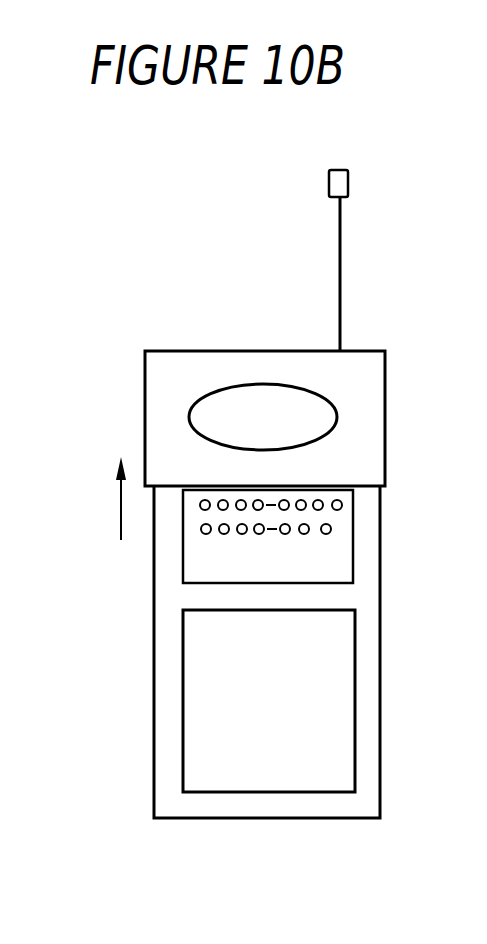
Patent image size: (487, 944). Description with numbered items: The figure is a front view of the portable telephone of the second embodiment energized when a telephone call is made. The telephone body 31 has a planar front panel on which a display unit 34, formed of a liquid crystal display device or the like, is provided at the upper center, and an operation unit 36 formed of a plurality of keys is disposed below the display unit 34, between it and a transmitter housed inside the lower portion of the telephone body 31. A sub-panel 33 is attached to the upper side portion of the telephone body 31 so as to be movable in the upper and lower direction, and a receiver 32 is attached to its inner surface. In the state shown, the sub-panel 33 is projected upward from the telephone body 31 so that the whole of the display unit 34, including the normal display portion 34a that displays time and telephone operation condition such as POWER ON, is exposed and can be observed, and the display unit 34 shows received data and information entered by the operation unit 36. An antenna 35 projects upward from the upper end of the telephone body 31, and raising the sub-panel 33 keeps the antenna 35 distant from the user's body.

The telephone body 31 is at (177, 599).
The receiver 32 is at (235, 402).
The sub-panel 33 is at (155, 383).
The display unit 34 is at (348, 505).
The normal display portion 34a is at (330, 562).
The antenna 35 is at (340, 260).
The operation unit 36 is at (338, 752).